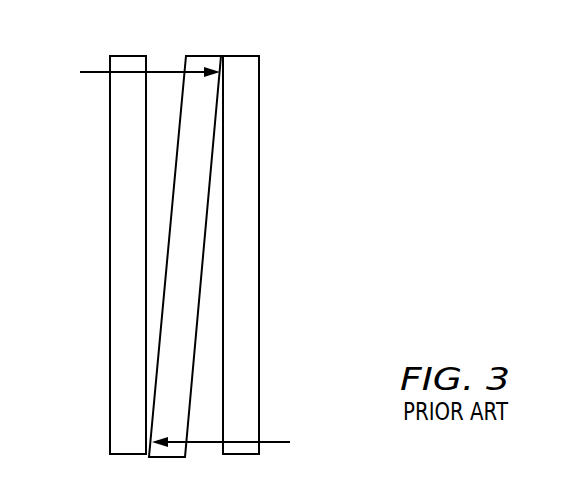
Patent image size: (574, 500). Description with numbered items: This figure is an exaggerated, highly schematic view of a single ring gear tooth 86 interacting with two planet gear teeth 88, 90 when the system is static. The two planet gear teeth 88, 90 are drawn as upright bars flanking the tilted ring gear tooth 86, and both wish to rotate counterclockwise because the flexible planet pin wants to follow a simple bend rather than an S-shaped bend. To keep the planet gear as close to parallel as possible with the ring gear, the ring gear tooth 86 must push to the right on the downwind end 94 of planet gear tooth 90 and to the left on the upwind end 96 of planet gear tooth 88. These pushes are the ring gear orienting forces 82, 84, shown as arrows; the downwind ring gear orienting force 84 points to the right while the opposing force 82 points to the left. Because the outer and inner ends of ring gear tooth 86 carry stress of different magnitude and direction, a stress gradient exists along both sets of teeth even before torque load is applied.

The ring gear orienting force 82 is at (272, 440).
The downwind ring gear orienting force 84 is at (100, 72).
The ring gear tooth 86 is at (205, 56).
The planet gear tooth 88 is at (125, 455).
The planet gear tooth 90 is at (240, 455).
The downwind end of planet gear tooth 94 is at (259, 68).
The upwind end of planet gear tooth 96 is at (111, 440).